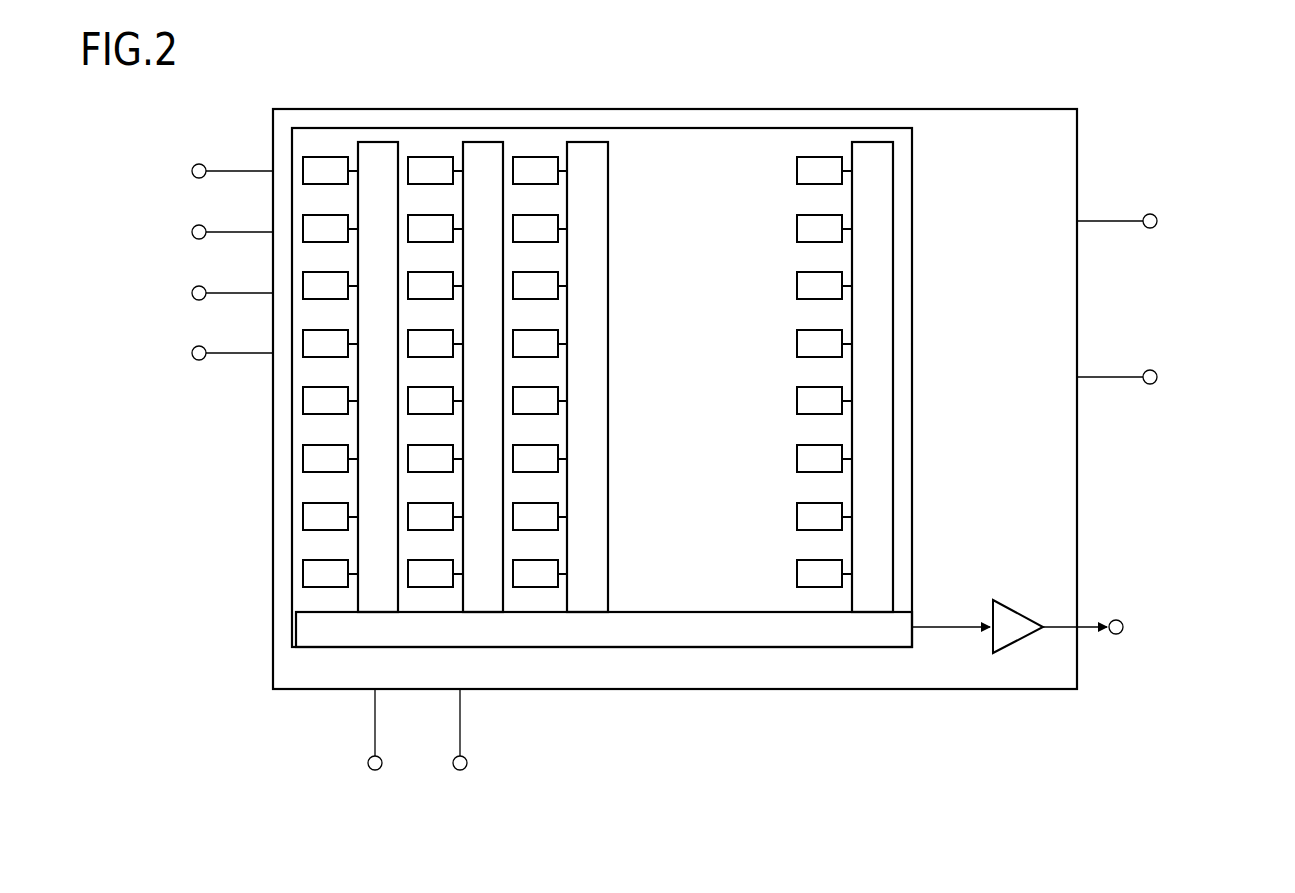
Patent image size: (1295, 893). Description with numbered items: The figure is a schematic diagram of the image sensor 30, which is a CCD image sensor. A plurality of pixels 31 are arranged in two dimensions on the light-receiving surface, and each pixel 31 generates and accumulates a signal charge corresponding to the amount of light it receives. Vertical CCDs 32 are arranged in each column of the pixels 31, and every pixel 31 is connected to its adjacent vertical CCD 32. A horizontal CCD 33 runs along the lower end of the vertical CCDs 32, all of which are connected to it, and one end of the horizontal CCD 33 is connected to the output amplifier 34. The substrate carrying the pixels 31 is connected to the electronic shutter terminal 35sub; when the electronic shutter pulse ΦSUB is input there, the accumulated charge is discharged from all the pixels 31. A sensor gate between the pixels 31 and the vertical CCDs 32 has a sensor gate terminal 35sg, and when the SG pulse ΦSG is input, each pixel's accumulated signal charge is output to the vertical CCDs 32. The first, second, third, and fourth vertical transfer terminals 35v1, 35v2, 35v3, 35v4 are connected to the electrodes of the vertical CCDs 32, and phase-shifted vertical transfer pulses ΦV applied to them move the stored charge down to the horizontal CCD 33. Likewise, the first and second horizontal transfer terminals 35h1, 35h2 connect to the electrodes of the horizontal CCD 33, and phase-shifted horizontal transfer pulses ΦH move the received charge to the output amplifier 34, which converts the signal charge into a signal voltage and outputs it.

The image sensor 30 is at (650, 105).
The pixel 31 is at (430, 157).
The vertical CCD 32 is at (583, 142).
The horizontal CCD 33 is at (668, 647).
The output amplifier 34 is at (1017, 640).
The first vertical transfer terminal 35v1 is at (192, 170).
The second vertical transfer terminal 35v2 is at (192, 231).
The third vertical transfer terminal 35v3 is at (192, 292).
The fourth vertical transfer terminal 35v4 is at (192, 352).
The sensor gate terminal 35sg is at (1157, 221).
The electronic shutter terminal 35sub is at (1157, 377).
The first horizontal transfer terminal 35h1 is at (375, 770).
The second horizontal transfer terminal 35h2 is at (460, 770).